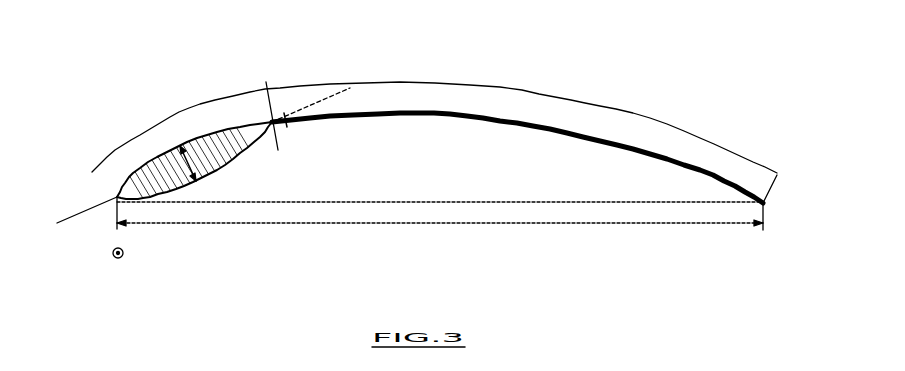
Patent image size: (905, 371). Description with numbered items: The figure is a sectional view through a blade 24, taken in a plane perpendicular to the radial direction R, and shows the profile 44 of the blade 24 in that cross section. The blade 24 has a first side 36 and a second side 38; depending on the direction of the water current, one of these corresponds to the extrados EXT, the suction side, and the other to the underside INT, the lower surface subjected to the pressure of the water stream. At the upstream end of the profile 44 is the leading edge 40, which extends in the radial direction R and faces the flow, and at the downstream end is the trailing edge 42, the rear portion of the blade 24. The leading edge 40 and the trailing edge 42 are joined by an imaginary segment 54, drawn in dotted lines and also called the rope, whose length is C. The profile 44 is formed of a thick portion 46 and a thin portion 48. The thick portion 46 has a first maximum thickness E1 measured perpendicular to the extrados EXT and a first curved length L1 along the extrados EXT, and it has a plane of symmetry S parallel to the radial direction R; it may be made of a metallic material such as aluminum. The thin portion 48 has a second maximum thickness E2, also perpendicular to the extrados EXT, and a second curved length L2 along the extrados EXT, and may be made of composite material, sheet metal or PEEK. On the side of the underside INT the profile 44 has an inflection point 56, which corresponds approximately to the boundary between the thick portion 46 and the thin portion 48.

The blade 24 is at (655, 100).
The first side 36 is at (380, 105).
The second side 38 is at (406, 124).
The leading edge 40 is at (112, 203).
The trailing edge 42 is at (763, 203).
The profile 44 is at (143, 148).
The thick portion 46 is at (243, 130).
The thin portion 48 is at (470, 125).
The imaginary segment 54 is at (528, 204).
The inflection point 56 is at (275, 125).
The length of the rope C is at (428, 226).
The radial direction R is at (124, 253).
The plane of symmetry S is at (72, 213).
The first maximum thickness E1 is at (205, 163).
The second maximum thickness E2 is at (289, 117).
The first curved length L1 is at (167, 116).
The second curved length L2 is at (555, 96).
The extrados EXT is at (494, 108).
The underside INT is at (365, 121).